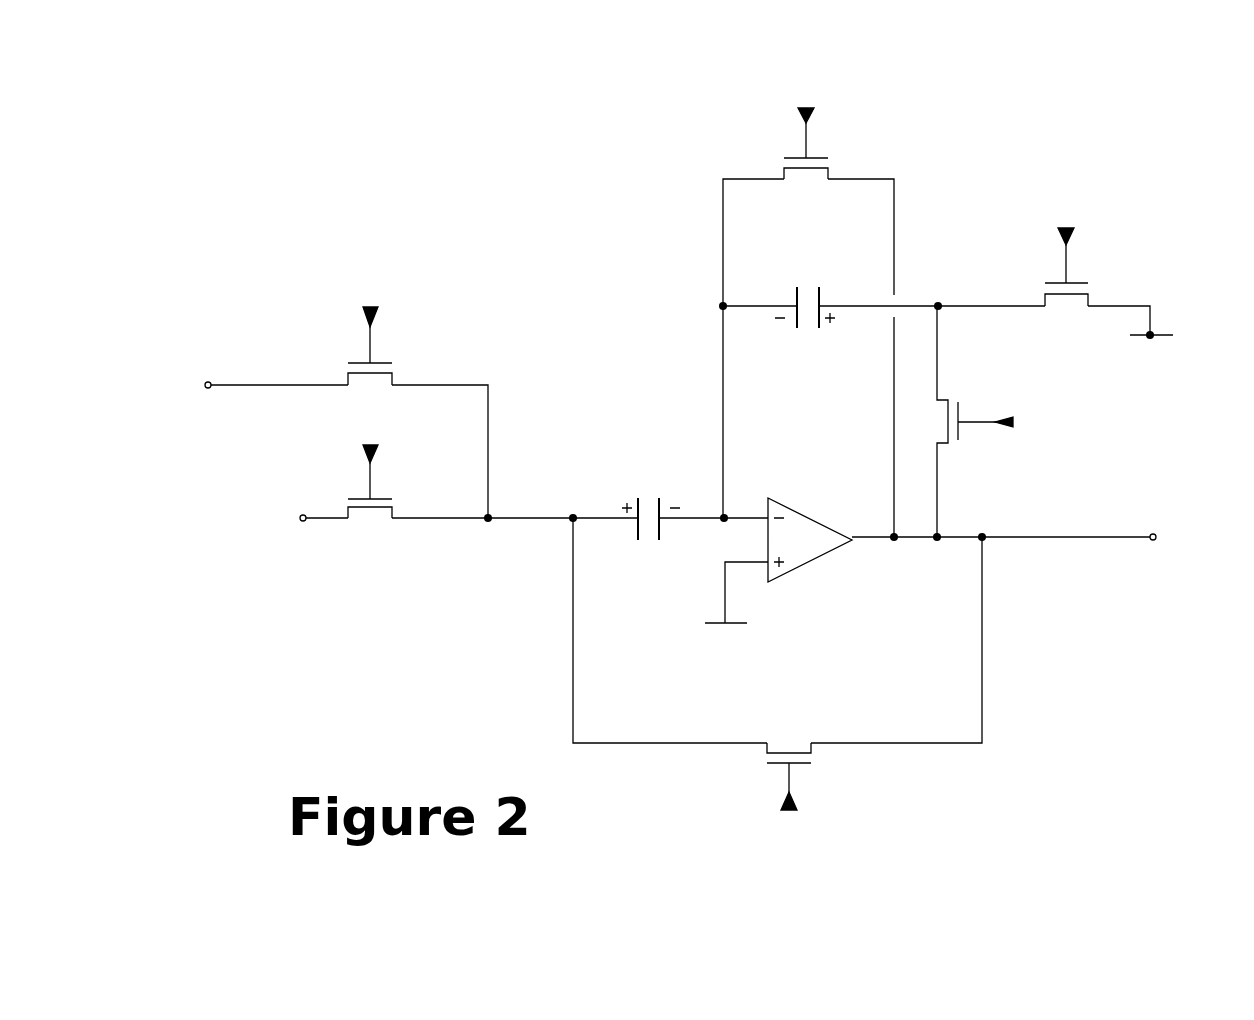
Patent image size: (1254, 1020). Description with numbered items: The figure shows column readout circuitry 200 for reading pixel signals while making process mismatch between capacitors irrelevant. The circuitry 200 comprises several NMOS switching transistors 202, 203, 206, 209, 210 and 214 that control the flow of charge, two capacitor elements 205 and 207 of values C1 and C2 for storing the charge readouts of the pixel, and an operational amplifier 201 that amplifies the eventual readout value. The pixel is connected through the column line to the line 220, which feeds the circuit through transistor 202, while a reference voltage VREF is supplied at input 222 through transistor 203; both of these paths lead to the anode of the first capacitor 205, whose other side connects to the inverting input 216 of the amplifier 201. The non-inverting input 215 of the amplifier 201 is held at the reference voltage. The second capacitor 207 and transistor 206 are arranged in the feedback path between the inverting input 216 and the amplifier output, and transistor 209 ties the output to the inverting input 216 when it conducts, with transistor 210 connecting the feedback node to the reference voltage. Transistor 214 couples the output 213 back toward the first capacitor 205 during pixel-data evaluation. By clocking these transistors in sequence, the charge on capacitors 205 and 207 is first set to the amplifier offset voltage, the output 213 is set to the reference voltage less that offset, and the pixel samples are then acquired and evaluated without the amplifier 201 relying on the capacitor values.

The column readout circuitry 200 is at (1063, 110).
The operational amplifier 201 is at (813, 582).
The NMOS transistor 202 is at (412, 358).
The NMOS transistor 203 is at (412, 495).
The first capacitor element 205 is at (625, 477).
The NMOS transistor 206 is at (802, 191).
The second capacitor 207 is at (780, 283).
The NMOS transistor 209 is at (961, 463).
The NMOS transistor 210 is at (1060, 316).
The output 213 is at (1147, 556).
The NMOS transistor 214 is at (825, 773).
The non-inverting input 215 is at (706, 588).
The inverting input 216 is at (747, 504).
The line 220 is at (203, 402).
The reference voltage input 222 is at (312, 532).